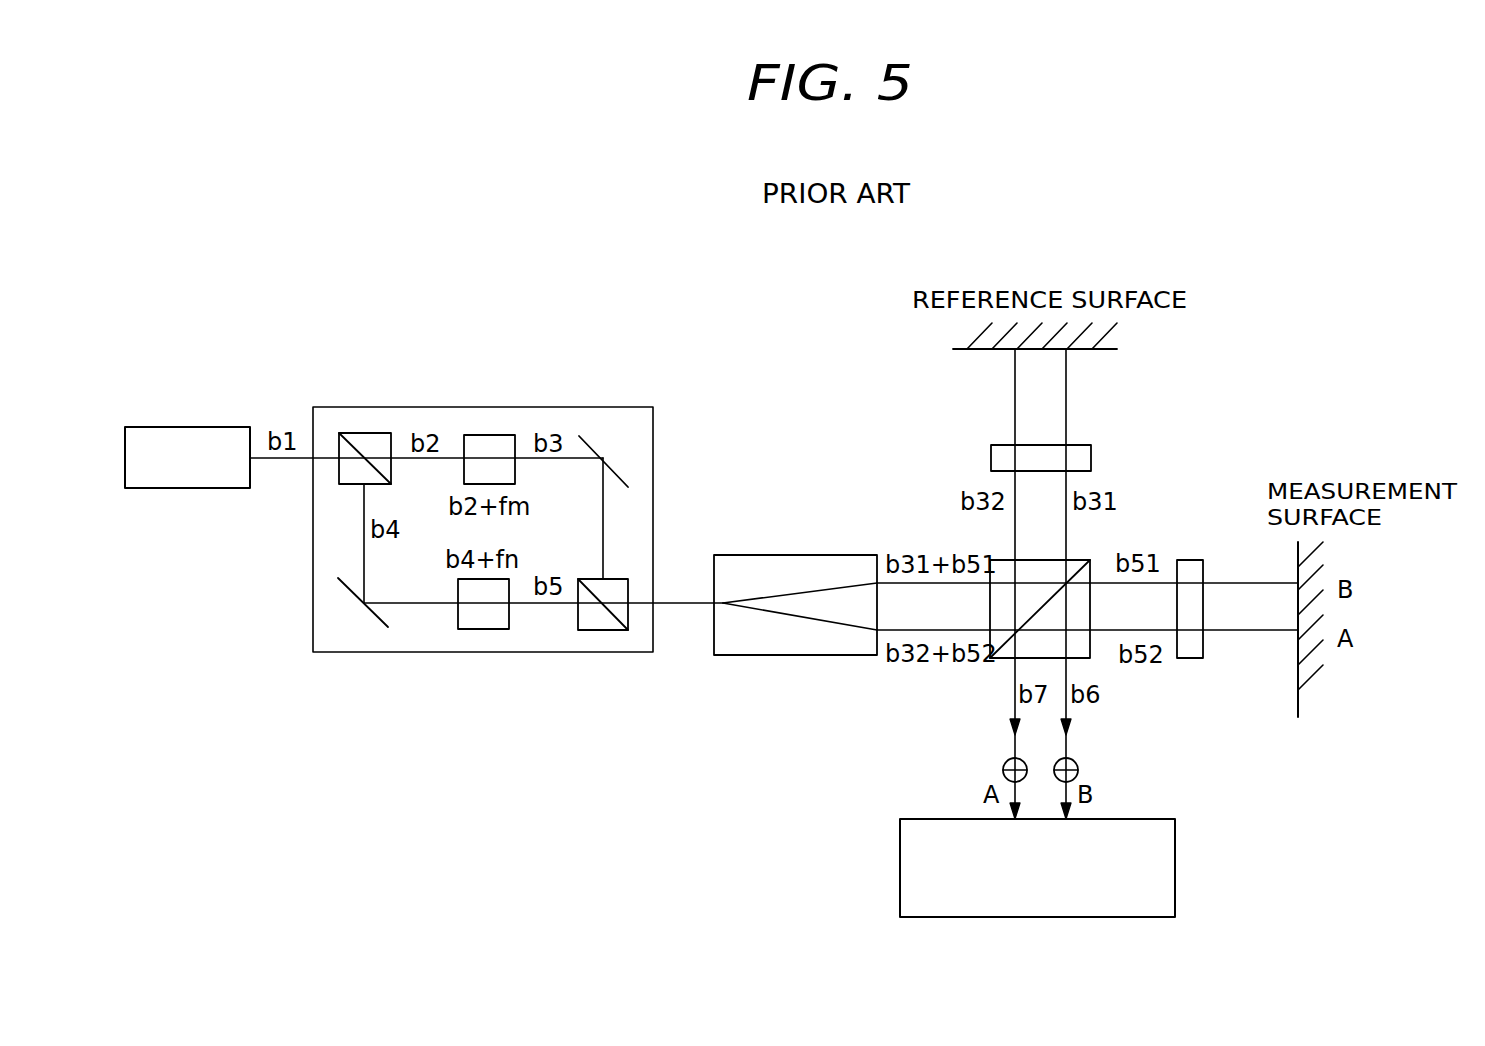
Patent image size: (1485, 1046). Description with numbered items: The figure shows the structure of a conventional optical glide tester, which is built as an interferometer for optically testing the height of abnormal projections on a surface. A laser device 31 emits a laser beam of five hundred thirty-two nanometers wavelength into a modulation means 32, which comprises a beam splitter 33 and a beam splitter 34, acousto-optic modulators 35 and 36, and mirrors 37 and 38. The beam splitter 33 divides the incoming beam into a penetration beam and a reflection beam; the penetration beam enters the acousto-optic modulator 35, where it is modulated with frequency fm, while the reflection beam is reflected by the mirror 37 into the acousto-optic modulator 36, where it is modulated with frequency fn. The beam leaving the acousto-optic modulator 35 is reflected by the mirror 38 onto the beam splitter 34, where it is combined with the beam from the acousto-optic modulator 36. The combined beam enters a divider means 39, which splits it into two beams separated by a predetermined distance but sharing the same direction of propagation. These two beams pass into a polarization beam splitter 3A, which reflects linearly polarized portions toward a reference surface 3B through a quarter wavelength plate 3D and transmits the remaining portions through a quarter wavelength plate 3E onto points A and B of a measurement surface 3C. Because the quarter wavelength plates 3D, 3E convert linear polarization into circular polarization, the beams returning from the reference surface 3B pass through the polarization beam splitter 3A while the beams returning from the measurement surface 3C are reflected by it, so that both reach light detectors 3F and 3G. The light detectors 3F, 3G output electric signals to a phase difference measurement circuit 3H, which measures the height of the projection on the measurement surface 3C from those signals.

The laser device 31 is at (182, 427).
The modulation means 32 is at (653, 440).
The beam splitter 33 is at (365, 432).
The beam splitter 34 is at (603, 630).
The acousto-optic modulator 35 is at (490, 435).
The acousto-optic modulator 36 is at (484, 630).
The mirror 37 is at (378, 628).
The mirror 38 is at (589, 435).
The divider means 39 is at (800, 655).
The polarization beam splitter 3A is at (1090, 658).
The reference surface 3B is at (1120, 349).
The measurement surface 3C is at (1298, 714).
The quarter wavelength plate 3D is at (989, 456).
The quarter wavelength plate 3E is at (1190, 558).
The light detector 3F is at (1003, 770).
The light detector 3G is at (1078, 770).
The phase difference measurement circuit 3H is at (1175, 866).